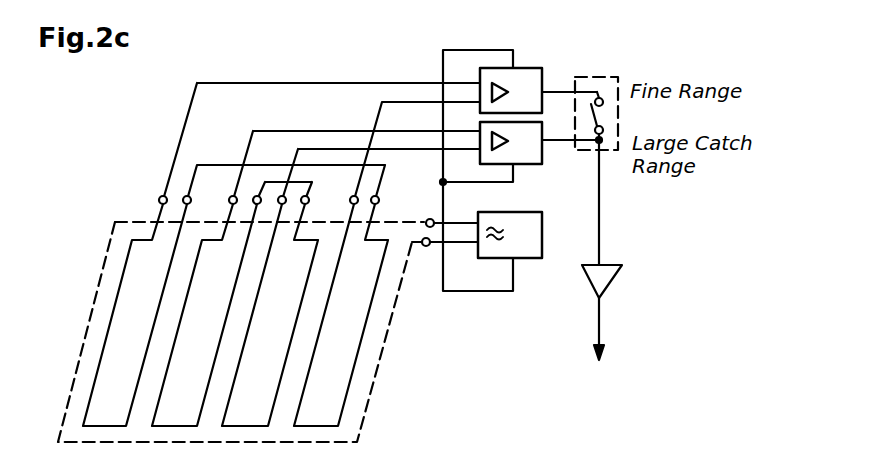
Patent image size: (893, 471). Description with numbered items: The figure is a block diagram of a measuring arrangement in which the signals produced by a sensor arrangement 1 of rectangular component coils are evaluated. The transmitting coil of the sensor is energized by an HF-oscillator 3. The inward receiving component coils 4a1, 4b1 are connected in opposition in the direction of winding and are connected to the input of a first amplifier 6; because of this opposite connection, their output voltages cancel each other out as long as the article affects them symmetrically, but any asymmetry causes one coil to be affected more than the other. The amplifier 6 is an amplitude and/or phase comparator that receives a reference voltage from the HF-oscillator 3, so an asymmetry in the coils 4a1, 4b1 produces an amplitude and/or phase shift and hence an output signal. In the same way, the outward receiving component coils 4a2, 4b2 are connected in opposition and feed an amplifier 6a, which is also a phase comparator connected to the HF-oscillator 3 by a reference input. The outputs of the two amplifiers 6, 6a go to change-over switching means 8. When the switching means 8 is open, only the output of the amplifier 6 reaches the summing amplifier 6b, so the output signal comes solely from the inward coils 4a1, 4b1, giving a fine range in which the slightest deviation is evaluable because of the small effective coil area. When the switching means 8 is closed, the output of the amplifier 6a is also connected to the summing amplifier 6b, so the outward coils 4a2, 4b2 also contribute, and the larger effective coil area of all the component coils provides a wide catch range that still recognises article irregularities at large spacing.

The measuring probe with coil arrangement 1 is at (388, 315).
The HF-oscillator 3 is at (510, 235).
The receiving component coil 4a1 is at (204, 315).
The receiving component coil 4a2 is at (135, 315).
The receiving component coil 4b1 is at (270, 315).
The receiving component coil 4b2 is at (341, 315).
The first amplifier 6 is at (539, 143).
The amplifier 6a is at (538, 90).
The summing amplifier 6b is at (618, 247).
The change-over switching means 8 is at (588, 150).